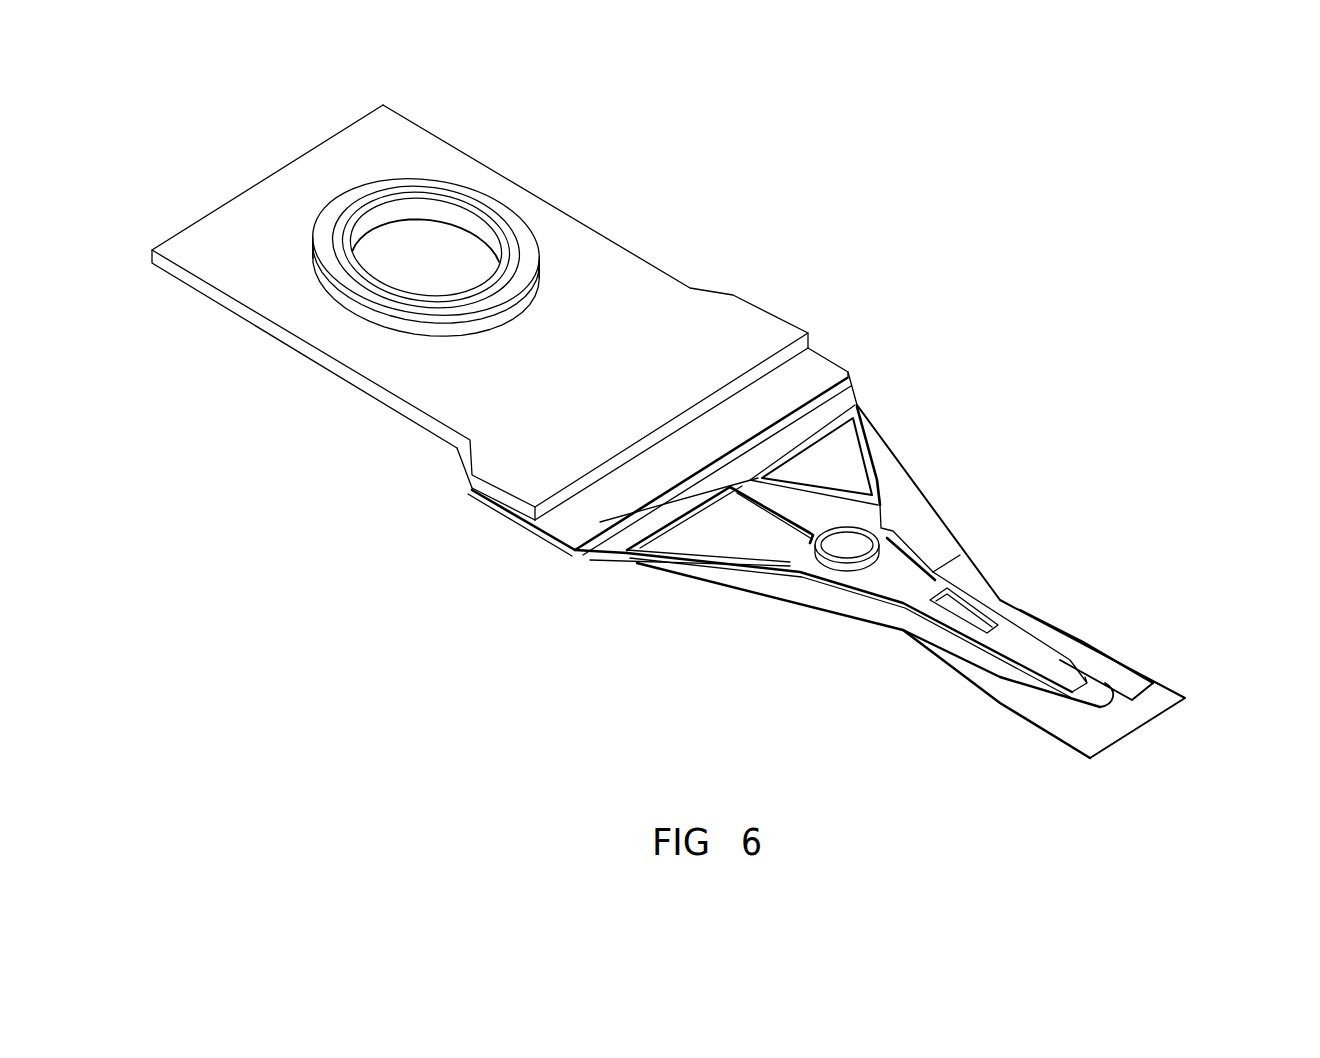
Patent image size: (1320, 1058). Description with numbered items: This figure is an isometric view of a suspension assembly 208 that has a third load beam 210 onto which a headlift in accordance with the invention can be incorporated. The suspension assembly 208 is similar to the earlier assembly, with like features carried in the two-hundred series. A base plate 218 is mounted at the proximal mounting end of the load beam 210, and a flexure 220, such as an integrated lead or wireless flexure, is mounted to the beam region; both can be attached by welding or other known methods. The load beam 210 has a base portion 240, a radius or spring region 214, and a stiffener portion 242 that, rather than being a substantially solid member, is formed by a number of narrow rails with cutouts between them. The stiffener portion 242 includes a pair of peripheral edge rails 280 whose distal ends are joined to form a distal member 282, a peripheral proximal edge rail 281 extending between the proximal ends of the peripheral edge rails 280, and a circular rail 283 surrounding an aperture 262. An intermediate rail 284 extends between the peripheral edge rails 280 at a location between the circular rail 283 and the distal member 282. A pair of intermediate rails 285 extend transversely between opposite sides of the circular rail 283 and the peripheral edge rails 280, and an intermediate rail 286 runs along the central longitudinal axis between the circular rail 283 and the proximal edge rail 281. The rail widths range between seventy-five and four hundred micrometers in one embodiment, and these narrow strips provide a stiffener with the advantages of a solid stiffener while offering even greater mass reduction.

The suspension assembly 208 is at (370, 430).
The load beam 210 is at (1020, 515).
The spring region 214 is at (603, 552).
The base plate 218 is at (548, 230).
The flexure 220 is at (1147, 670).
The base portion 240 is at (887, 630).
The stiffener portion 242 is at (923, 540).
The aperture 262 is at (807, 538).
The peripheral edge rails 280 is at (862, 493).
The peripheral proximal edge rail 281 is at (773, 455).
The distal member 282 is at (1062, 640).
The circular rail 283 is at (843, 550).
The intermediate rail 284 is at (1047, 660).
The intermediate rails 285 is at (877, 533).
The intermediate rail 286 is at (760, 492).